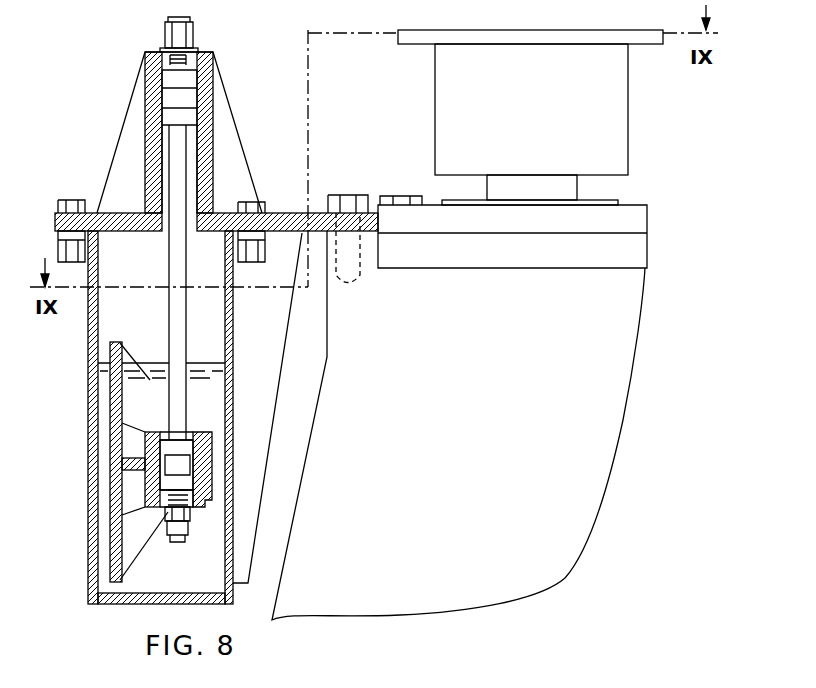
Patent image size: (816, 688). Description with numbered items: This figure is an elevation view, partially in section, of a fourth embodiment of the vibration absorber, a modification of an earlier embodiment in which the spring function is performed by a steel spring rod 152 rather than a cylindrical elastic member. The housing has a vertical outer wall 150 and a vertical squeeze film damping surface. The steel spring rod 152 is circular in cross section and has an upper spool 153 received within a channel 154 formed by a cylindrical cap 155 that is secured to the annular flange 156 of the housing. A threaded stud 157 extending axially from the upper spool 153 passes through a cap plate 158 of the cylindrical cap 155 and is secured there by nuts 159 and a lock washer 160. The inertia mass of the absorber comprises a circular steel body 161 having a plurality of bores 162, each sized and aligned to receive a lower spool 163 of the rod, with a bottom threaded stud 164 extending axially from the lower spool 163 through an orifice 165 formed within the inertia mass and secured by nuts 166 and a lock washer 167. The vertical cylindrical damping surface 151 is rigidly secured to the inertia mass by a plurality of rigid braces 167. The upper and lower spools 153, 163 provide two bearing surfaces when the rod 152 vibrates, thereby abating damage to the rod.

The vertical outer wall 150 is at (88, 410).
The vertical cylindrical damping surface 151 is at (110, 452).
The steel spring rod 152 is at (170, 306).
The upper spool 153 is at (187, 98).
The channel 154 is at (192, 155).
The cylindrical cap 155 is at (207, 67).
The annular flange 156 is at (130, 213).
The threaded stud 157 is at (185, 22).
The cap plate 158 is at (152, 52).
The nuts 159 is at (196, 42).
The lock washer 160 is at (165, 50).
The circular steel body 161 is at (212, 493).
The bores 162 is at (187, 430).
The lower spool 163 is at (190, 448).
The bottom threaded stud 164 is at (180, 543).
The orifice 165 is at (186, 528).
The nuts 166 is at (165, 520).
The lock washer / rigid braces 167 is at (140, 365).